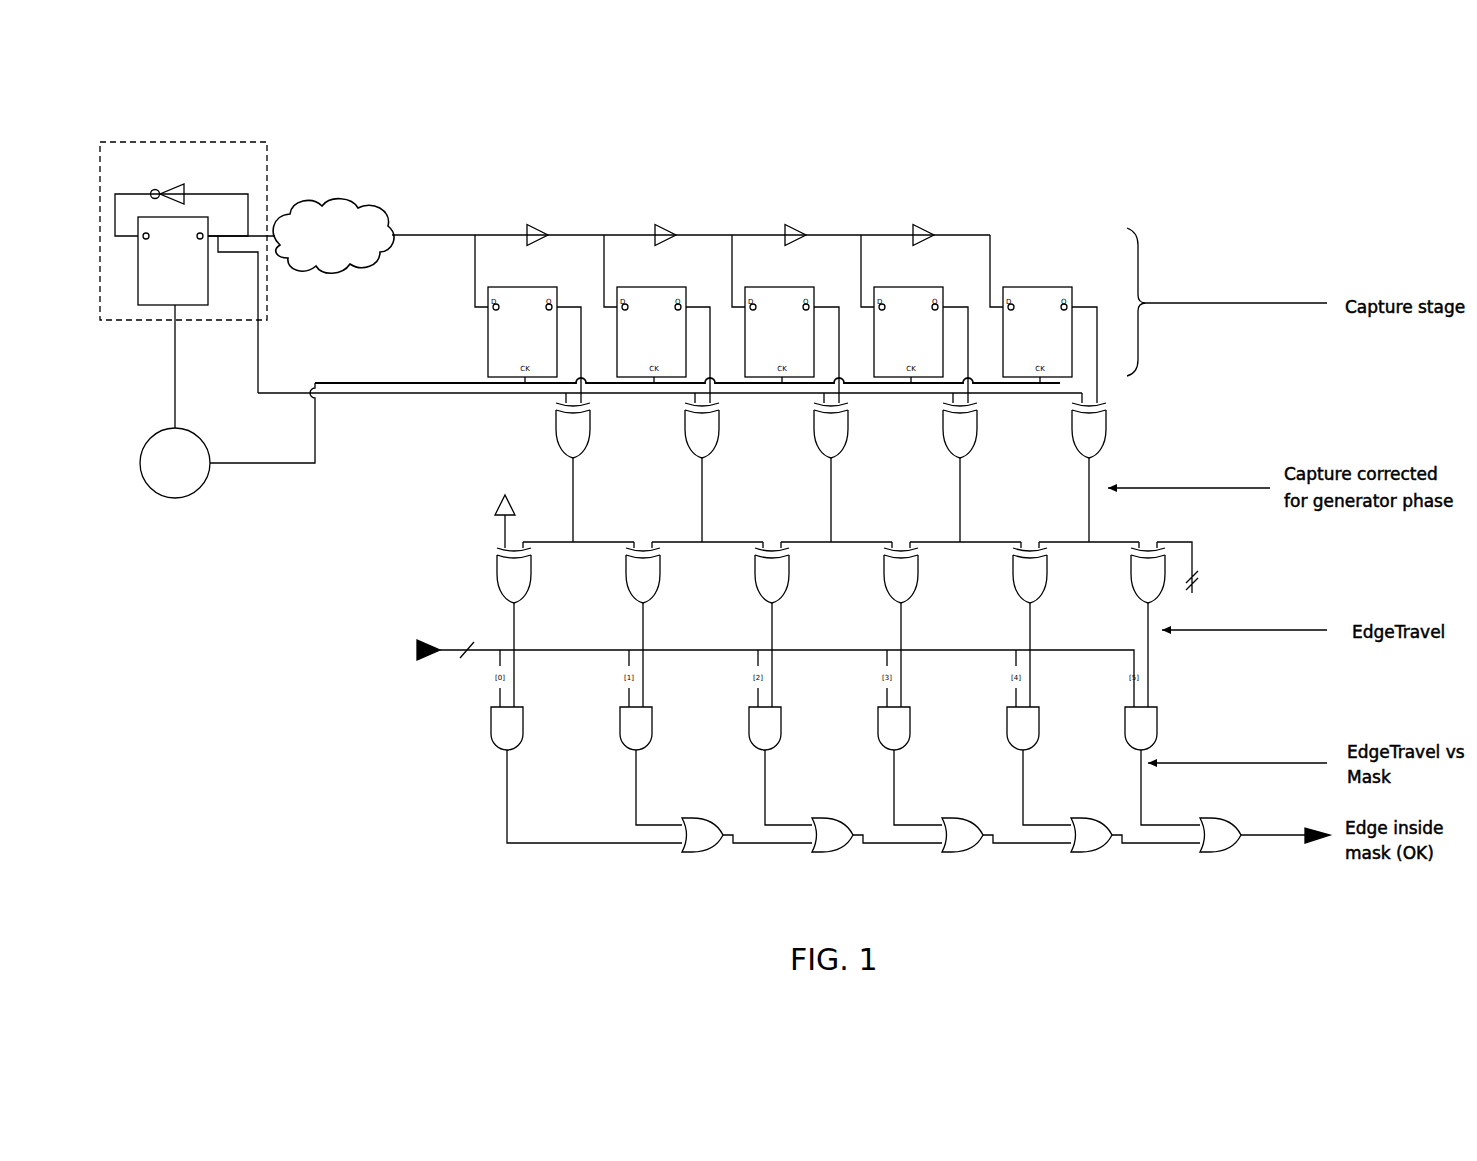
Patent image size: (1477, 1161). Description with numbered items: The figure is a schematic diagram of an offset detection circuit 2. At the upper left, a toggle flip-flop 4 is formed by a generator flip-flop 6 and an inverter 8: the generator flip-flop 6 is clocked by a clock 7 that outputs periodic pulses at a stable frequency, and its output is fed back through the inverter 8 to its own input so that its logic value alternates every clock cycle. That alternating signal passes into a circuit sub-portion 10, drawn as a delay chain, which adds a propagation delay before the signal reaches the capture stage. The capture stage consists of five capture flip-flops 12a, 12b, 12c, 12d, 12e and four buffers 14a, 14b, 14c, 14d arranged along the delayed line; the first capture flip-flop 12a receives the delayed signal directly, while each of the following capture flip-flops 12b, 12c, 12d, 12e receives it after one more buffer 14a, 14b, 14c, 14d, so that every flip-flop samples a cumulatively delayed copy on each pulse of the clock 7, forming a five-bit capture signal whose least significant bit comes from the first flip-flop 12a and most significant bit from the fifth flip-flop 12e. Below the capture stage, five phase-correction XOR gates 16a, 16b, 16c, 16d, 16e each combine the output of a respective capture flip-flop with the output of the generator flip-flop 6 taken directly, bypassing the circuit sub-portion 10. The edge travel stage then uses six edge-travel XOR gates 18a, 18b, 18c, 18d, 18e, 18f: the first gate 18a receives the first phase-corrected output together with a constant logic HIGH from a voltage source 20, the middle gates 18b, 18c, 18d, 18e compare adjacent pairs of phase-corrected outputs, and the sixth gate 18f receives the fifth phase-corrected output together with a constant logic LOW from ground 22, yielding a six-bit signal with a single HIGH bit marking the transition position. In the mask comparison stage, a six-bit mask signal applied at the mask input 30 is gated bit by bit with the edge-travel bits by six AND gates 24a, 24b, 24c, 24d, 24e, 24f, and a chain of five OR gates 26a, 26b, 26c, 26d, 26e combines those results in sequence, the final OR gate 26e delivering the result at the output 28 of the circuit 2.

The offset detection circuit 2 is at (1195, 180).
The toggle flip-flop 4 is at (205, 140).
The generator flip-flop 6 is at (200, 292).
The clock 7 is at (172, 487).
The inverter 8 is at (178, 190).
The circuit sub-portion 10 is at (320, 213).
The first capture flip-flop 12a is at (511, 300).
The second capture flip-flop 12b is at (644, 300).
The third capture flip-flop 12c is at (774, 300).
The fourth capture flip-flop 12d is at (899, 300).
The fifth capture flip-flop 12e is at (1036, 300).
The first buffer 14a is at (535, 238).
The second buffer 14b is at (663, 238).
The third buffer 14c is at (793, 238).
The fourth buffer 14d is at (921, 238).
The first phase-correction XOR gate 16a is at (577, 425).
The second phase-correction XOR gate 16b is at (706, 425).
The third phase-correction XOR gate 16c is at (835, 425).
The fourth phase-correction XOR gate 16d is at (964, 425).
The fifth phase-correction XOR gate 16e is at (1093, 425).
The first edge-travel XOR gate 18a is at (513, 570).
The second edge-travel XOR gate 18b is at (642, 570).
The third edge-travel XOR gate 18c is at (771, 570).
The fourth edge-travel XOR gate 18d is at (900, 570).
The fifth edge-travel XOR gate 18e is at (1029, 570).
The sixth edge-travel XOR gate 18f is at (1155, 568).
The voltage source 20 is at (498, 503).
The ground 22 is at (1205, 595).
The first AND gate 24a is at (504, 721).
The second AND gate 24b is at (633, 721).
The third AND gate 24c is at (762, 721).
The fourth AND gate 24d is at (891, 721).
The fifth AND gate 24e is at (1020, 721).
The sixth AND gate 24f is at (1150, 732).
The first OR gate 26a is at (694, 835).
The second OR gate 26b is at (824, 835).
The third OR gate 26c is at (954, 835).
The fourth OR gate 26d is at (1083, 835).
The fifth OR gate 26e is at (1212, 835).
The output 28 is at (1319, 845).
The mask input 30 is at (416, 645).